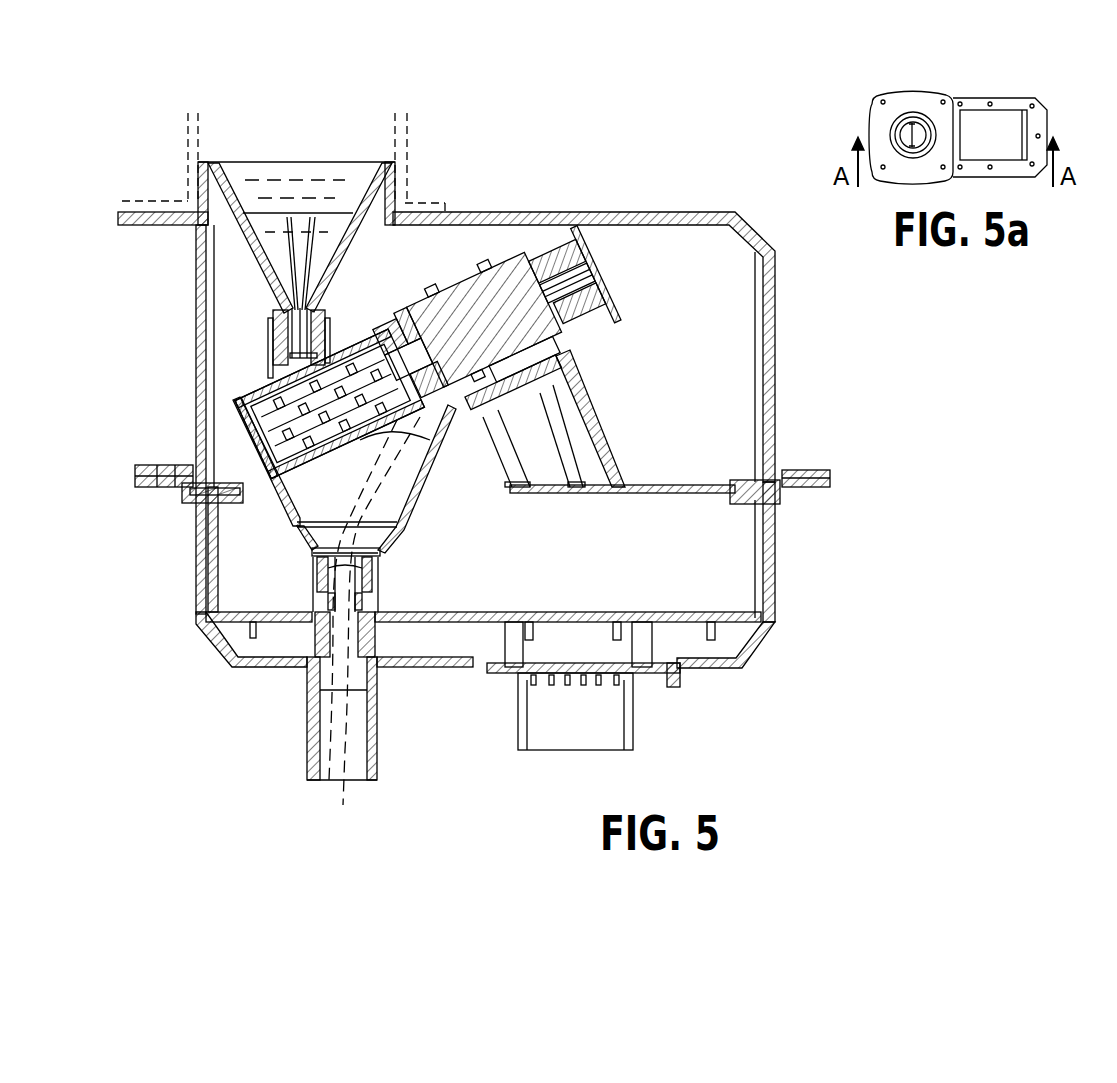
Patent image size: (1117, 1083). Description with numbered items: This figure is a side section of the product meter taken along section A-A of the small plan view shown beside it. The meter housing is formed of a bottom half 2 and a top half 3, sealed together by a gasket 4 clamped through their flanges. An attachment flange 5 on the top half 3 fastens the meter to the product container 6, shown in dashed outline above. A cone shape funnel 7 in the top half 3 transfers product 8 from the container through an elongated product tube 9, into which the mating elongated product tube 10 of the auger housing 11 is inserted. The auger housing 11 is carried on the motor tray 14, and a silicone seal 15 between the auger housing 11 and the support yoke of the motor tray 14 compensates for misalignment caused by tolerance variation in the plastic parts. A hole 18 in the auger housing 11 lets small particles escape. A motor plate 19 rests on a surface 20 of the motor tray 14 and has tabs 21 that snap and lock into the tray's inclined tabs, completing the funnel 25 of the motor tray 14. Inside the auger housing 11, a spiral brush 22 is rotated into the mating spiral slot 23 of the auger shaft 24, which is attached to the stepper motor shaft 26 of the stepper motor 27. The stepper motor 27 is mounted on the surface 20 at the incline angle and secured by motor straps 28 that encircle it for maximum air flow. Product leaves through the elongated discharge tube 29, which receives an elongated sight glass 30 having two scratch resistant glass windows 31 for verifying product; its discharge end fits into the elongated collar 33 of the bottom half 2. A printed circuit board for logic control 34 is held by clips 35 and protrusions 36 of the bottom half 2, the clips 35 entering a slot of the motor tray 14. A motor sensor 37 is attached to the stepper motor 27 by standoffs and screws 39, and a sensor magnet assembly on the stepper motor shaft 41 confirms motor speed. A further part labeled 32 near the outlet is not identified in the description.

The bottom half 2 is at (778, 588).
The top half 3 is at (777, 378).
The gasket 4 is at (138, 470).
The attachment flange 5 is at (128, 213).
The product container 6 is at (186, 140).
The cone shape funnel 7 is at (420, 505).
The product 8 is at (323, 180).
The elongated product tube 9 is at (279, 312).
The mating elongated product tube 10 is at (273, 330).
The auger housing 11 is at (263, 380).
The motor tray 14 is at (553, 360).
The silicone seal 15 is at (228, 482).
The hole 18 is at (293, 497).
The motor plate 19 is at (410, 312).
The surface 20 is at (517, 413).
The tabs 21 is at (326, 597).
The spiral brush 22 is at (258, 390).
The spiral slot 23 is at (255, 402).
The auger shaft 24 is at (242, 398).
The funnel 25 is at (372, 460).
The stepper motor shaft 26 is at (383, 323).
The stepper motor 27 is at (460, 288).
The motor straps 28 is at (493, 258).
The elongated discharge tube 29 is at (378, 750).
The sight glass 30 is at (378, 623).
The glass windows 31 is at (380, 598).
The outer tube 32 is at (375, 662).
The elongated collar 33 is at (322, 572).
The printed circuit board for logic control 34 is at (672, 620).
The clips 35 is at (205, 565).
The protrusions 36 is at (195, 640).
The motor sensor 37 is at (580, 264).
The screws 39 is at (603, 272).
The stepper motor shaft 41 is at (553, 288).